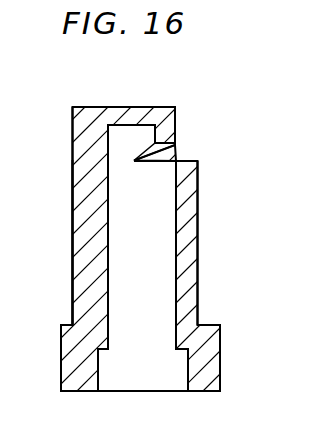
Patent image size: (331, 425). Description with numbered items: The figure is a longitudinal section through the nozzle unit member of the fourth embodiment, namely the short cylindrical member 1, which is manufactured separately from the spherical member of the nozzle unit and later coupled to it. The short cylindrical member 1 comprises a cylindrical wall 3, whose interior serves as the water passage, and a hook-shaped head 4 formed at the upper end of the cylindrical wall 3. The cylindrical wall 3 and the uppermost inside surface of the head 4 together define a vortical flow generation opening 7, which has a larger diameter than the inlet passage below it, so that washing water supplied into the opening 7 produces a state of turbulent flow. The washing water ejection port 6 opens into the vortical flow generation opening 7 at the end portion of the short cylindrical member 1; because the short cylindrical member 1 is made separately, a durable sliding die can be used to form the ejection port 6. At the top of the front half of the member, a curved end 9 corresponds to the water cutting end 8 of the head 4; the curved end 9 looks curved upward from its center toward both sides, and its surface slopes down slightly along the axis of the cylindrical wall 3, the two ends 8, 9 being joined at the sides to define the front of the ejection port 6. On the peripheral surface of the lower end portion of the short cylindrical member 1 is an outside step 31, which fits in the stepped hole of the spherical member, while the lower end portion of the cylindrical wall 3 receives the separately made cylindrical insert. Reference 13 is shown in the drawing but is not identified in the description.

The short cylindrical member 1 is at (208, 165).
The cylindrical wall 3 is at (113, 238).
The head 4 is at (122, 107).
The washing water ejection port 6 is at (190, 144).
The vortical flow generation opening 7 is at (115, 152).
The water cutting end 8 is at (181, 141).
The curved end 9 is at (199, 160).
The inner passage 13 is at (166, 163).
The outside step 31 is at (71, 325).